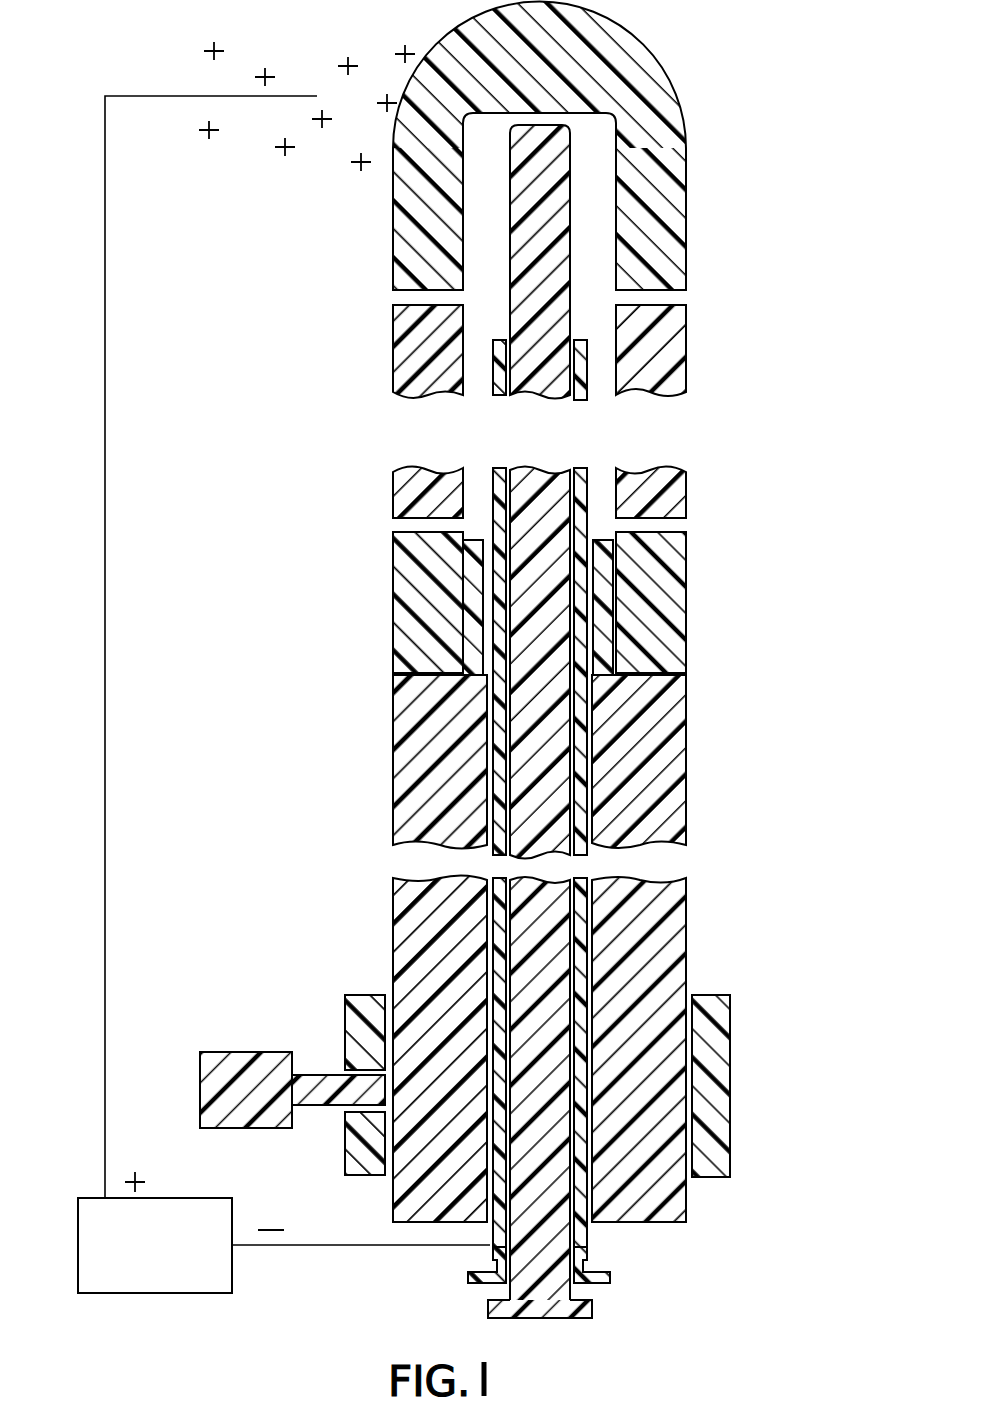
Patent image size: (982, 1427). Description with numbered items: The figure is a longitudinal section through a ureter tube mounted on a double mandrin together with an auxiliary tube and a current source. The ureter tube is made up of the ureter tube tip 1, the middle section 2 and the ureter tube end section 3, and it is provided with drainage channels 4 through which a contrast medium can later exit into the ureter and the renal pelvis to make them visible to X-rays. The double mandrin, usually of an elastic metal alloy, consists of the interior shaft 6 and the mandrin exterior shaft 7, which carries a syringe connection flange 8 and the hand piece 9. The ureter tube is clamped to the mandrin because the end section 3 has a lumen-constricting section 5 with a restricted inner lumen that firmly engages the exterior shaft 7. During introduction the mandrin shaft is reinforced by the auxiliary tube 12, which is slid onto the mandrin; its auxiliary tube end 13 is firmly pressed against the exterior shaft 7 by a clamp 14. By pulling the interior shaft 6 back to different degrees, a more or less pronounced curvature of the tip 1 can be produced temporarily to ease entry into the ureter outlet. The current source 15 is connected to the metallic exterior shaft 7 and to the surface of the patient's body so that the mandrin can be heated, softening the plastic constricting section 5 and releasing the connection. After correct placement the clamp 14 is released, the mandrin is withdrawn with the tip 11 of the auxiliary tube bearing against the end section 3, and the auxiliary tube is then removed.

The ureter tube tip 1 is at (580, 4).
The ureter tube middle section 2 is at (393, 210).
The ureter tube end section 3 is at (393, 572).
The drainage channels 4 is at (392, 296).
The lumen-constricting section 5 is at (606, 541).
The mandrin interior shaft 6 is at (562, 232).
The mandrin exterior shaft 7 is at (585, 340).
The syringe connection flange 8 is at (468, 1279).
The hand piece 9 is at (592, 1308).
The auxiliary tube tip 11 is at (686, 690).
The auxiliary tube 12 is at (393, 798).
The auxiliary tube end 13 is at (680, 1205).
The clamp 14 is at (308, 1075).
The current source 15 is at (184, 1256).